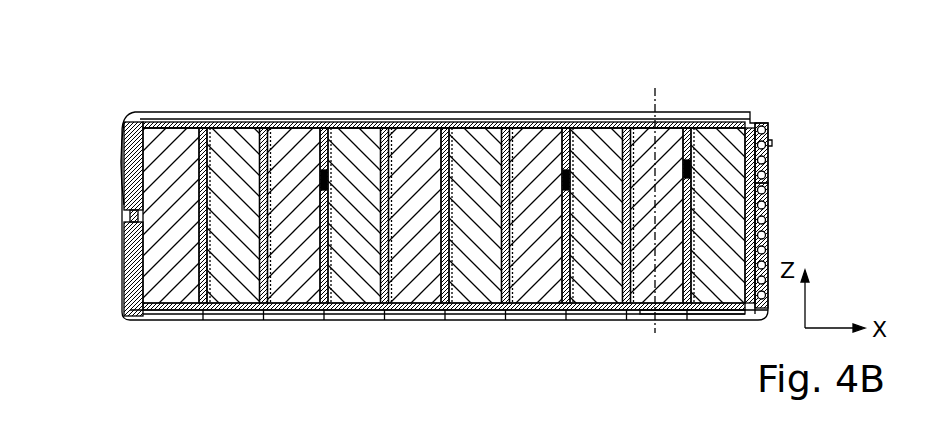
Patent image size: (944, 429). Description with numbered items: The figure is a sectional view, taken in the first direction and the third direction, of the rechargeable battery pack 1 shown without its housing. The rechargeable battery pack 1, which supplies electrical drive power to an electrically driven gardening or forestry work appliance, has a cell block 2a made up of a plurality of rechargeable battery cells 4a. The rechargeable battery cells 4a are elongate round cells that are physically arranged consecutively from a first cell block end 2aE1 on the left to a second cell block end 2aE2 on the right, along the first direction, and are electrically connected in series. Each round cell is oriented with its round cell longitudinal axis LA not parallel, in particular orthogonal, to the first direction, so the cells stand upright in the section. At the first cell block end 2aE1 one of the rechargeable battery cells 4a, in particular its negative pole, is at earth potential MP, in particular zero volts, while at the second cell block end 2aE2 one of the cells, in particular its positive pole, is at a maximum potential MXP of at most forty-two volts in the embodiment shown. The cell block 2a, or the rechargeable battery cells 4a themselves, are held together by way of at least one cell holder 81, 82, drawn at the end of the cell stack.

The rechargeable battery pack 1 is at (114, 84).
The cell block 2a is at (172, 221).
The rechargeable battery cell 4a is at (172, 173).
The first cell block end 2aE1 is at (122, 253).
The second cell block end 2aE2 is at (766, 242).
The cell holder 81 is at (762, 221).
The cell holder 82 is at (768, 173).
The earth potential MP is at (170, 310).
The maximum potential MXP is at (720, 305).
The round cell longitudinal axis LA is at (657, 95).